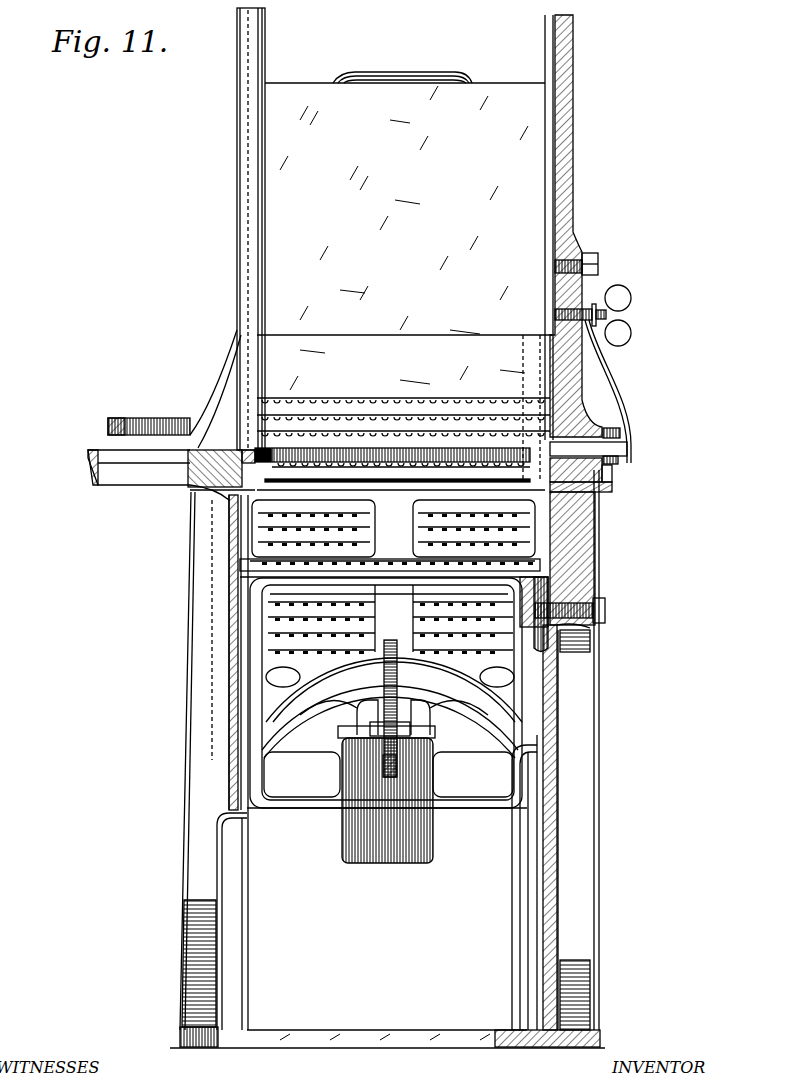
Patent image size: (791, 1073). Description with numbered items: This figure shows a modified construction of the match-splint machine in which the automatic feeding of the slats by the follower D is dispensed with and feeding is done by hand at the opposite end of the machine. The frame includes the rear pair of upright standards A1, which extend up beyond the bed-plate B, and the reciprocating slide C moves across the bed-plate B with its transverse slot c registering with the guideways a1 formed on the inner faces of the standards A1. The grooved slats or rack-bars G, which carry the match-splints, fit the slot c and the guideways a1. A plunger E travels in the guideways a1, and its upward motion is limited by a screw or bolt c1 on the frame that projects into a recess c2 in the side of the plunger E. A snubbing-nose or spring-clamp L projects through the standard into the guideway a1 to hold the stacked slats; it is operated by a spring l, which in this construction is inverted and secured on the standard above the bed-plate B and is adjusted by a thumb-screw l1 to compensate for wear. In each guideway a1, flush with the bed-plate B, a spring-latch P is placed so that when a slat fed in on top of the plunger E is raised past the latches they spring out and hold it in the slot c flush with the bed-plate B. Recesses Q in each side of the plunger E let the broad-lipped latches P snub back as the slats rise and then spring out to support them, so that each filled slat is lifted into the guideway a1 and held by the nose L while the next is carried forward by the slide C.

The rear standards A1 is at (387, 759).
The guideways a1 is at (266, 256).
The hopper box K is at (404, 276).
The slats or rack-bars G is at (403, 444).
The block e is at (263, 465).
The transverse slot c is at (397, 491).
The spring-latch P is at (626, 496).
The slide C is at (213, 490).
The snubbing-nose or spring-clamp L is at (588, 452).
The spring l is at (622, 398).
The thumb-screw l1 is at (603, 319).
The bed-plate B is at (392, 530).
The recesses Q is at (386, 693).
The plunger E is at (394, 696).
The follower D is at (330, 716).
The cylinder F is at (386, 758).
The screw or bolt c1 is at (606, 614).
The recess c2 is at (534, 627).